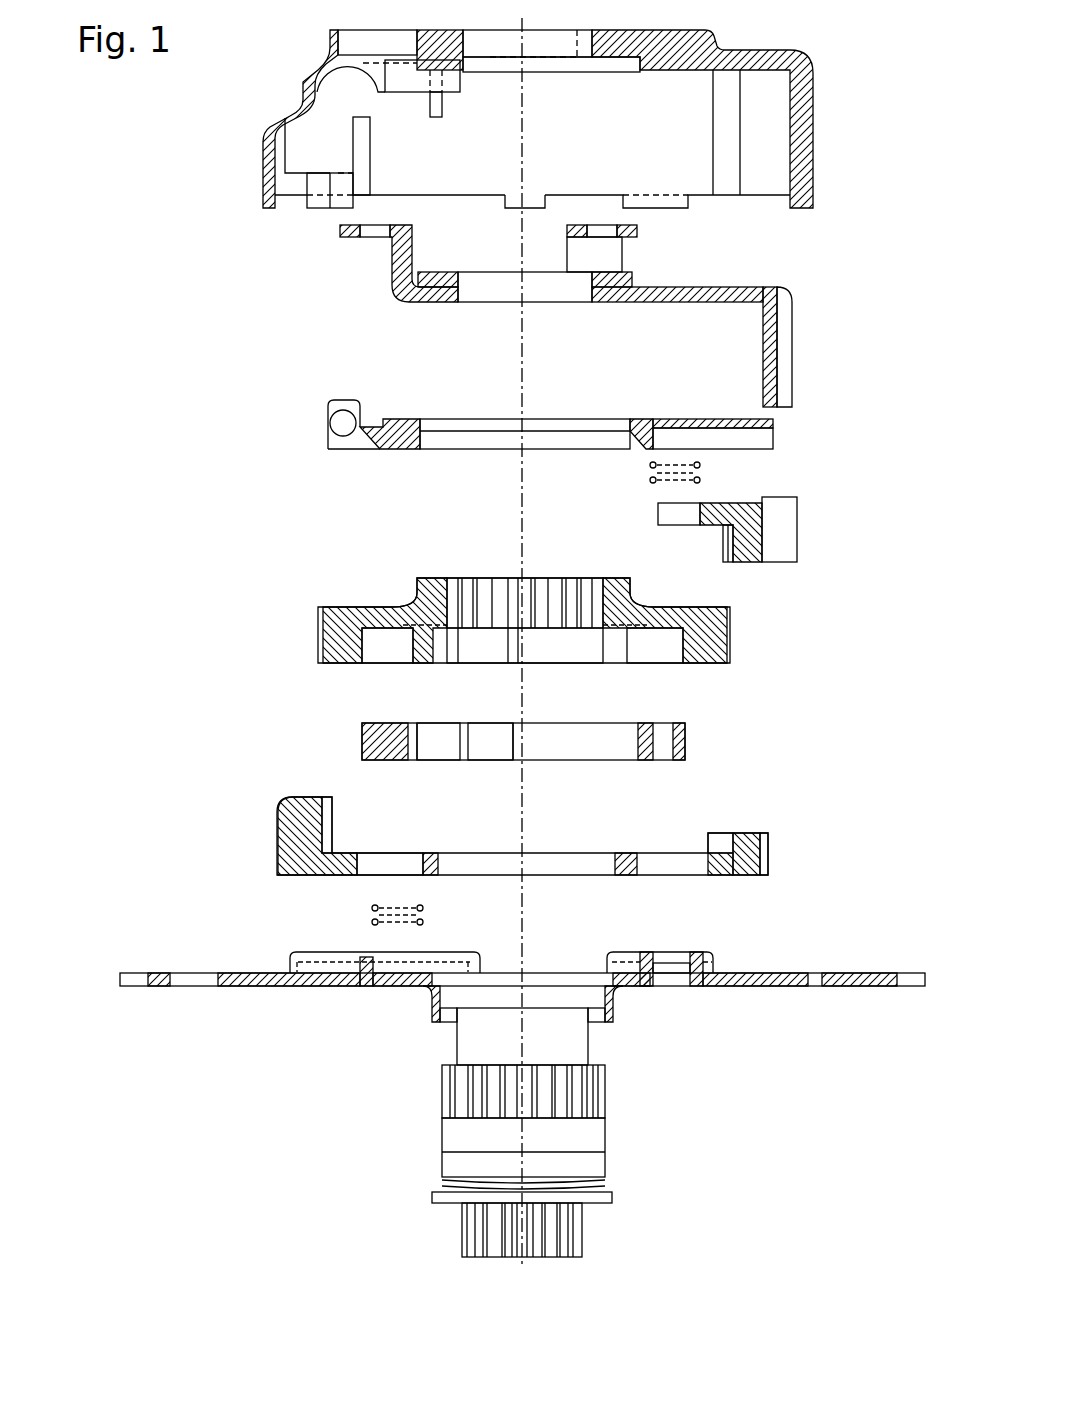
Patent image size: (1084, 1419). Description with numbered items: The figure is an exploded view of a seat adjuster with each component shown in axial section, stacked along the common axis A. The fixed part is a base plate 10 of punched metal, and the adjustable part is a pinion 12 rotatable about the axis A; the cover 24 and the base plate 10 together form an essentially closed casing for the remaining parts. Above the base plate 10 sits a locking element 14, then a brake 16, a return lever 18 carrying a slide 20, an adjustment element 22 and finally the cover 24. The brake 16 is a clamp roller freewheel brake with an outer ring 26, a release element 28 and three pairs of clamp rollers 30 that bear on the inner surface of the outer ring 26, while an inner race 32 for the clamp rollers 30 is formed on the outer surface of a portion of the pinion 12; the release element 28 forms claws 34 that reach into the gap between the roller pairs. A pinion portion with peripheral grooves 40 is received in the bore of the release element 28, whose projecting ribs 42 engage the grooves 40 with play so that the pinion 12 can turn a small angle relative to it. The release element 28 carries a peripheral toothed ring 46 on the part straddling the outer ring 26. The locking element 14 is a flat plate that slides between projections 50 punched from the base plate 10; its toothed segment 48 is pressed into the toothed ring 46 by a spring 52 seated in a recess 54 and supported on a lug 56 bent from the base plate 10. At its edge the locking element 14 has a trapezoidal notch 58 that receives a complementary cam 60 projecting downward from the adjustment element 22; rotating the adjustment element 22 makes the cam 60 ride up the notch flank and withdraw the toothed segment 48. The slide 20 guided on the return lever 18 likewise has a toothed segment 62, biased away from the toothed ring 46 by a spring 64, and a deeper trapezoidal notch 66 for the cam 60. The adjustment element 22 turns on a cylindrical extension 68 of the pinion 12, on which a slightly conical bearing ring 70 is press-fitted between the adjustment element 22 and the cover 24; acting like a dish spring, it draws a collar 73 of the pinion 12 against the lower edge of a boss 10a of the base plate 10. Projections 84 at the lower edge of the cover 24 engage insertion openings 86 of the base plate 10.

The base plate 10 is at (512, 970).
The boss 10a is at (617, 1010).
The pinion 12 is at (504, 1132).
The locking element 14 is at (516, 829).
The brake 16 is at (499, 672).
The return lever 18 is at (265, 428).
The slide 20 is at (728, 524).
The adjustment element 22 is at (626, 316).
The cover 24 is at (472, 147).
The outer ring 26 is at (573, 763).
The release element 28 is at (524, 619).
The clamp rollers 30 is at (440, 750).
The inner race 32 is at (592, 1138).
The claws 34 is at (565, 650).
The grooves 40 is at (517, 1092).
The ribs 42 is at (518, 590).
The toothed ring 46 is at (320, 625).
The toothed segment 48 is at (324, 800).
The projections 50 is at (290, 962).
The spring 52 is at (370, 918).
The recess 54 is at (385, 863).
The lug 56 is at (357, 968).
The notch 58 is at (767, 853).
The cam 60 is at (763, 377).
The toothed segment 62 is at (722, 545).
The spring 64 is at (643, 472).
The notch 66 is at (783, 547).
The cylindrical extension 68 is at (573, 1043).
The bearing ring 70 is at (632, 276).
The collar 73 is at (613, 1197).
The projections 84 is at (263, 200).
The insertion openings 86 is at (267, 978).
The axis A is at (517, 362).